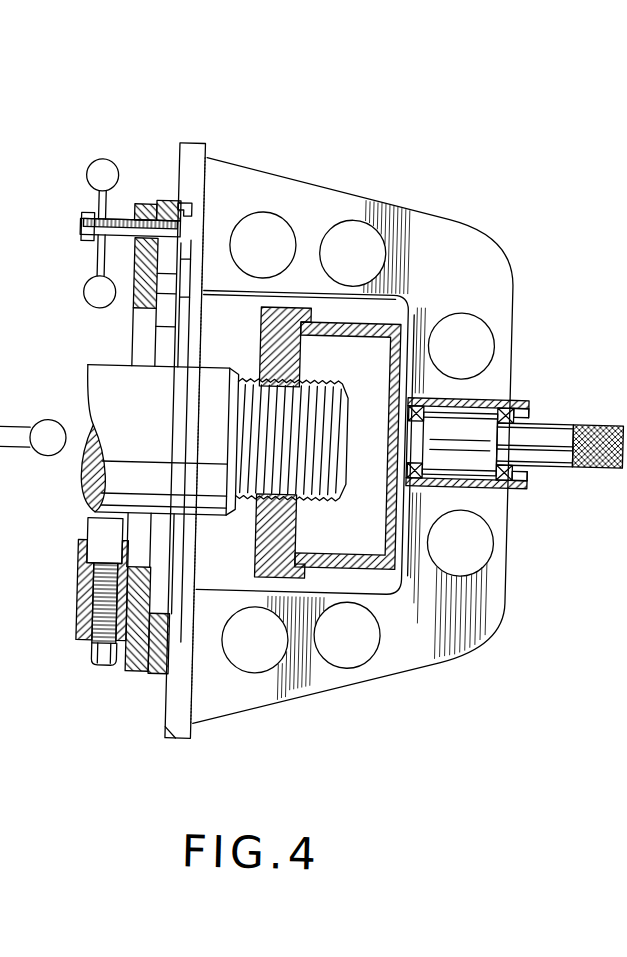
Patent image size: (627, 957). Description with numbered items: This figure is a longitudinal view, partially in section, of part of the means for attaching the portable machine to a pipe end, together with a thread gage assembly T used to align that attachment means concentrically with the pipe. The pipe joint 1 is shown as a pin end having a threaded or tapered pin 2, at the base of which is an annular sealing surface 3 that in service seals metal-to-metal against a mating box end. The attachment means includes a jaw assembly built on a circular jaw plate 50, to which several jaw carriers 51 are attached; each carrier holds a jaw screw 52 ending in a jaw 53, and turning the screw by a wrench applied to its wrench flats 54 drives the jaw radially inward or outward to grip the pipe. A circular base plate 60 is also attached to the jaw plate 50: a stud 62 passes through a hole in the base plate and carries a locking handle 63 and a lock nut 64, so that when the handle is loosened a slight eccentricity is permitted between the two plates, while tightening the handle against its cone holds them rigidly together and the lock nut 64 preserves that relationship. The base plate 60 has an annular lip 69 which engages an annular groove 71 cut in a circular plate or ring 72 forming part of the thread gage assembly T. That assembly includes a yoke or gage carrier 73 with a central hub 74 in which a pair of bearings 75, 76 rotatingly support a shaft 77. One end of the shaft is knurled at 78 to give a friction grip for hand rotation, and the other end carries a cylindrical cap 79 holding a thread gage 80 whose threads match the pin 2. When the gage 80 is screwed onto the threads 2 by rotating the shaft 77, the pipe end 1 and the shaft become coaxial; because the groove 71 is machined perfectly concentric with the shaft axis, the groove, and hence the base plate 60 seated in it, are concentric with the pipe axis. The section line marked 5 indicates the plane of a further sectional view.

The pipe joint 1 is at (210, 384).
The threaded pin 2 is at (309, 383).
The annular sealing surface 3 is at (239, 500).
The section line 5- 5 is at (68, 131).
The jaw plate 50 is at (149, 216).
The jaw carrier 51 is at (88, 574).
The jaw screw 52 is at (102, 592).
The jaw 53 is at (105, 533).
The wrench flats 54 is at (97, 657).
The circular base plate 60 is at (134, 338).
The stud 62 is at (123, 229).
The locking handle 63 is at (91, 272).
The lock nut 64 is at (82, 228).
The annular lip 69 is at (176, 218).
The annular groove 71 is at (187, 219).
The circular plate or ring 72 is at (203, 158).
The gage carrier 73 is at (425, 232).
The central hub 74 is at (486, 395).
The bearing 75 is at (409, 408).
The bearing 76 is at (521, 483).
The shaft 77 is at (550, 423).
The knurled portion 78 is at (606, 451).
The cylindrical cap 79 is at (360, 560).
The thread gage 80 is at (284, 512).
The thread gage assembly T is at (300, 178).